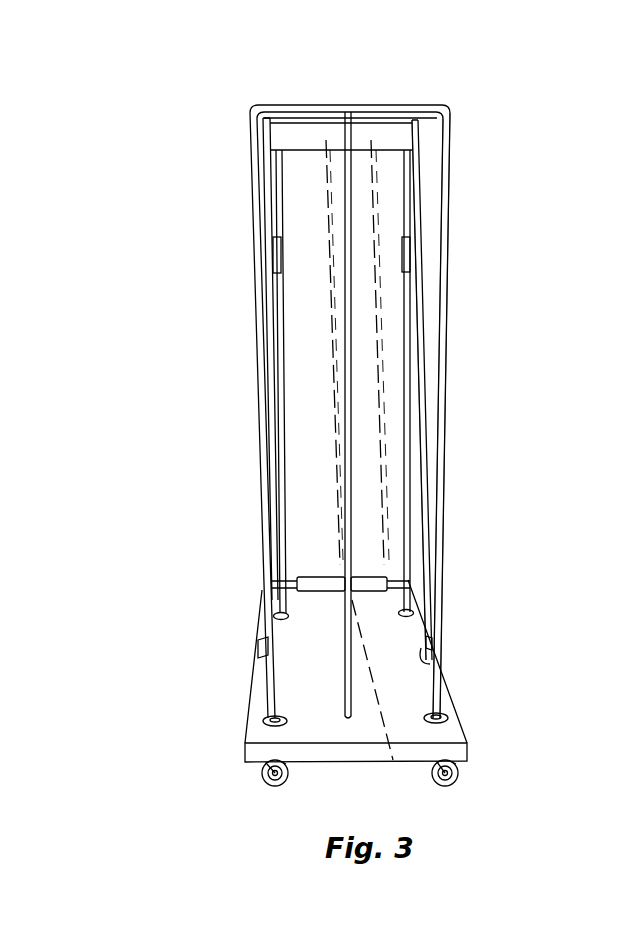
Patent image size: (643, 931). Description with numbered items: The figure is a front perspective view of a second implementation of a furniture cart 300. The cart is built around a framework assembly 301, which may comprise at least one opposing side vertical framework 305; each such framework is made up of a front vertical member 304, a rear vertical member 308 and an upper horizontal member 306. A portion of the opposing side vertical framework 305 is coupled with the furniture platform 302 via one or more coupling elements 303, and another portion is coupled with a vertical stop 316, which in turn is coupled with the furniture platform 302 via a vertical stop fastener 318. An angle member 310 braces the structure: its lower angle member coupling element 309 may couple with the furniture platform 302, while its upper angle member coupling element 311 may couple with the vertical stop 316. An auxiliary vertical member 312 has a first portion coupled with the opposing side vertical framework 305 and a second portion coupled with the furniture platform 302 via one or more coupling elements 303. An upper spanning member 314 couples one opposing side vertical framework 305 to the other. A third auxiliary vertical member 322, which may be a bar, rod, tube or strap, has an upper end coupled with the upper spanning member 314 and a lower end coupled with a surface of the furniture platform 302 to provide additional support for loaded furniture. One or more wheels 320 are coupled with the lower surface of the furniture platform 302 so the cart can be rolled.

The furniture cart 300 is at (122, 121).
The framework assembly 301 is at (303, 95).
The furniture platform 302 is at (458, 725).
The coupling element 303 is at (263, 719).
The front vertical member 304 is at (440, 512).
The opposing side vertical framework 305 is at (458, 144).
The upper horizontal member 306 is at (425, 108).
The rear vertical member 308 is at (406, 130).
The lower angle member coupling element 309 is at (440, 661).
The angle member 310 is at (420, 420).
The upper angle member coupling element 311 is at (415, 248).
The auxiliary vertical member 312 is at (405, 566).
The upper spanning member 314 is at (317, 108).
The vertical stop 316 is at (312, 180).
The vertical stop fastener 318 is at (318, 582).
The wheel 320 is at (458, 770).
The third auxiliary vertical member 322 is at (348, 685).